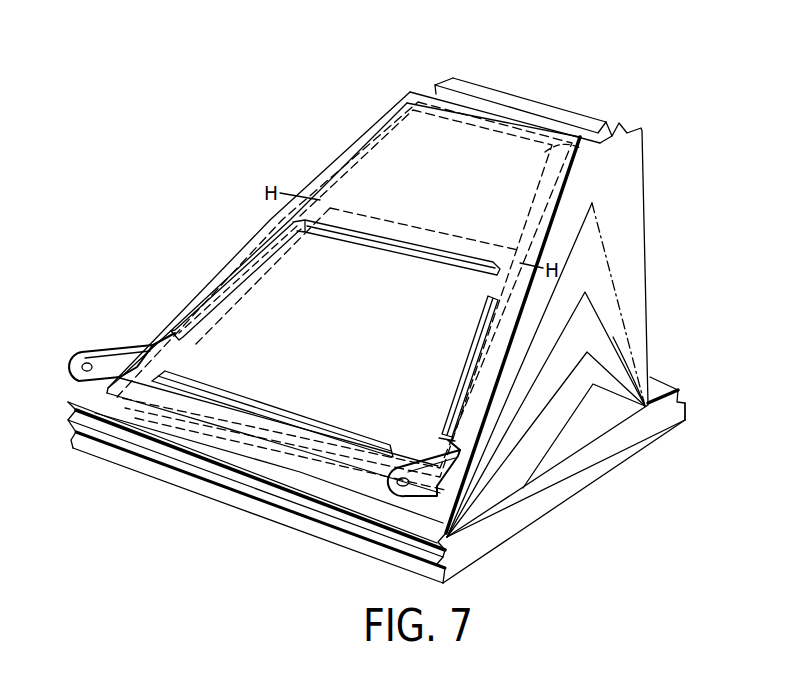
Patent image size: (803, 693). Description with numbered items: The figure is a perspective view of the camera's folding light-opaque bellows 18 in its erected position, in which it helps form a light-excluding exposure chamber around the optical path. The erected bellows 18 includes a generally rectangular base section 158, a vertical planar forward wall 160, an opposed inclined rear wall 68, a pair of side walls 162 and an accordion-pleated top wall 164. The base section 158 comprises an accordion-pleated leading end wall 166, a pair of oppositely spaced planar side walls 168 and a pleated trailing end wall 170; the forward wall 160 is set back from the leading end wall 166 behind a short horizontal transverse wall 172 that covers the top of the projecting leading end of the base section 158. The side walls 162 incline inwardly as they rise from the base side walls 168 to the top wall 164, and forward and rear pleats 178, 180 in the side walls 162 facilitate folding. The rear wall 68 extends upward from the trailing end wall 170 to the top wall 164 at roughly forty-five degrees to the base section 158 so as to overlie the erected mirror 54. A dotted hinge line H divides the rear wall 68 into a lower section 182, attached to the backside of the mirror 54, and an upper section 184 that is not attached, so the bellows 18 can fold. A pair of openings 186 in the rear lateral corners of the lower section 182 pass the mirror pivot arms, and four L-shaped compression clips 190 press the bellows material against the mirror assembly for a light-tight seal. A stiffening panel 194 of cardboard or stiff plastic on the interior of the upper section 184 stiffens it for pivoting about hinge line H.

The bellows 18 is at (670, 263).
The mirror 54 is at (577, 149).
The rear wall 68 is at (300, 210).
The base section 158 is at (695, 418).
The forward wall 160 is at (658, 247).
The side walls 162 is at (593, 385).
The top wall 164 is at (463, 87).
The leading end wall 166 is at (686, 395).
The side walls 168 is at (543, 507).
The trailing end wall 170 is at (253, 490).
The transverse wall 172 is at (660, 383).
The forward pleat 178 is at (645, 425).
The rear pleat 180 is at (503, 462).
The lower section 182 is at (218, 273).
The upper section 184 is at (372, 137).
The openings 186 is at (142, 348).
The compression clips 190 is at (253, 267).
The stiffening panel 194 is at (460, 162).